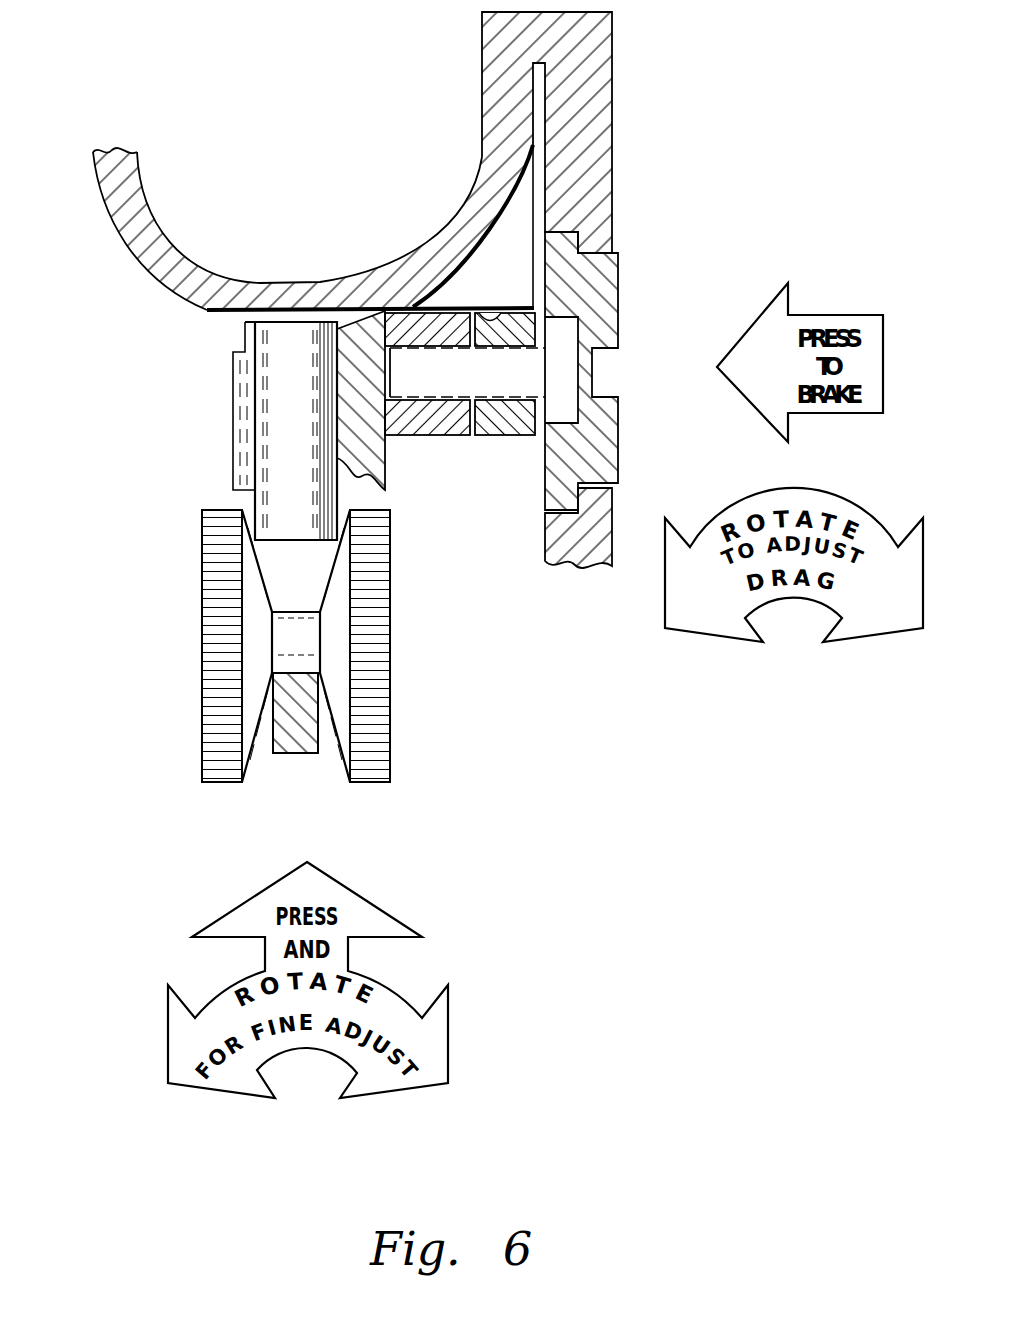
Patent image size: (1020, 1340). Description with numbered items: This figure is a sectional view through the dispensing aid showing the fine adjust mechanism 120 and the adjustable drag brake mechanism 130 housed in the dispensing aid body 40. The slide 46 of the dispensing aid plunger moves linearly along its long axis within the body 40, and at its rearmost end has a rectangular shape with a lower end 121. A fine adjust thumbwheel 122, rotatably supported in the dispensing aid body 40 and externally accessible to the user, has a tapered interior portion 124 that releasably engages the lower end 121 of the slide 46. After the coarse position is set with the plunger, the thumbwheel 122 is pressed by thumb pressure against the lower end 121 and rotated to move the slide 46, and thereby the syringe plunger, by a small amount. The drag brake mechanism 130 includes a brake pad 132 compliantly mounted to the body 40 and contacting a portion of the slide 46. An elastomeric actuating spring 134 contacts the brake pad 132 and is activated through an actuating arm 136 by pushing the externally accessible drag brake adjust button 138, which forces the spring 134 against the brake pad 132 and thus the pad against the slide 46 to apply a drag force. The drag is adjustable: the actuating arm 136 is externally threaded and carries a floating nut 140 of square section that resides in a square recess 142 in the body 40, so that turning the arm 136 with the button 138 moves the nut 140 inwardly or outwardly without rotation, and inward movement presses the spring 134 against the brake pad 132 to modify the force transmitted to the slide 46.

The dispensing aid body 40 is at (585, 102).
The slide 46 is at (273, 402).
The fine adjust mechanism 120 is at (163, 598).
The lower end 121 is at (277, 520).
The fine adjust thumbwheel 122 is at (392, 672).
The tapered interior portion 124 is at (252, 762).
The adjustable drag brake mechanism 130 is at (659, 259).
The brake pad 132 is at (390, 478).
The actuating spring 134 is at (407, 323).
The actuating arm 136 is at (433, 388).
The drag brake adjust button 138 is at (618, 428).
The floating nut 140 is at (480, 185).
The square recess 142 is at (457, 228).